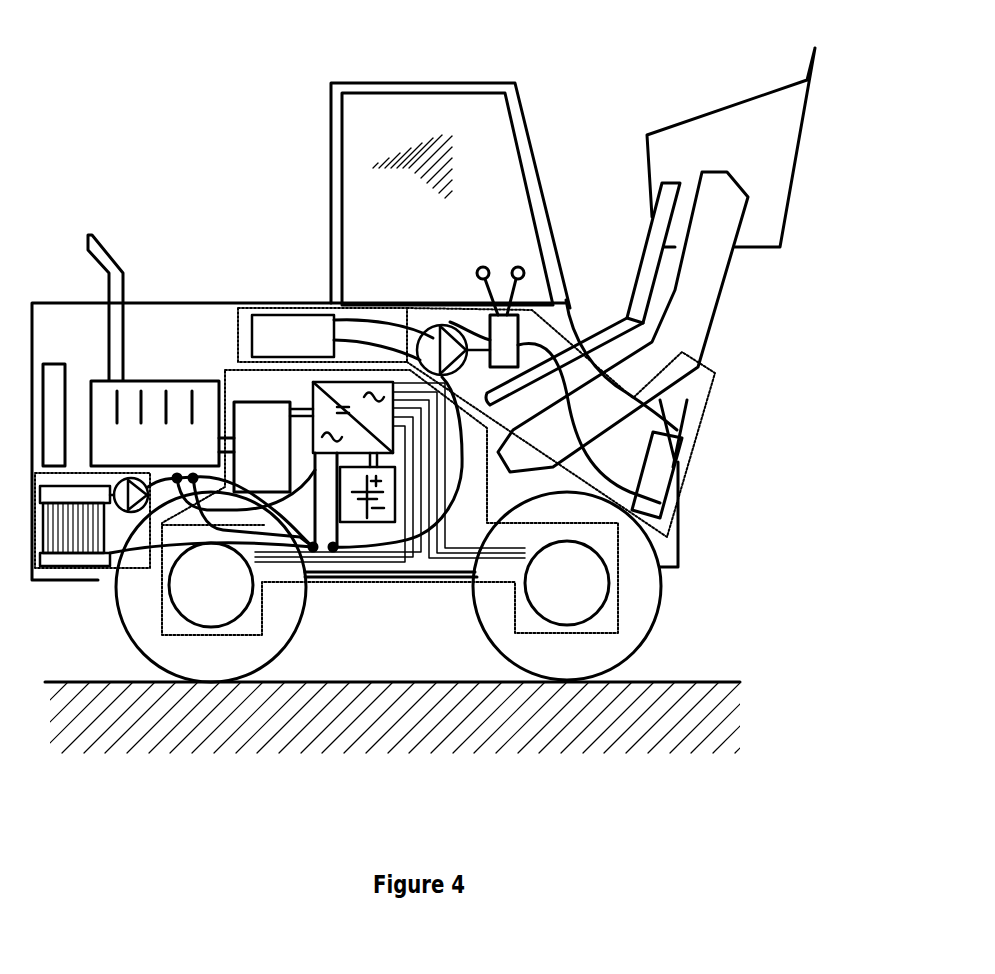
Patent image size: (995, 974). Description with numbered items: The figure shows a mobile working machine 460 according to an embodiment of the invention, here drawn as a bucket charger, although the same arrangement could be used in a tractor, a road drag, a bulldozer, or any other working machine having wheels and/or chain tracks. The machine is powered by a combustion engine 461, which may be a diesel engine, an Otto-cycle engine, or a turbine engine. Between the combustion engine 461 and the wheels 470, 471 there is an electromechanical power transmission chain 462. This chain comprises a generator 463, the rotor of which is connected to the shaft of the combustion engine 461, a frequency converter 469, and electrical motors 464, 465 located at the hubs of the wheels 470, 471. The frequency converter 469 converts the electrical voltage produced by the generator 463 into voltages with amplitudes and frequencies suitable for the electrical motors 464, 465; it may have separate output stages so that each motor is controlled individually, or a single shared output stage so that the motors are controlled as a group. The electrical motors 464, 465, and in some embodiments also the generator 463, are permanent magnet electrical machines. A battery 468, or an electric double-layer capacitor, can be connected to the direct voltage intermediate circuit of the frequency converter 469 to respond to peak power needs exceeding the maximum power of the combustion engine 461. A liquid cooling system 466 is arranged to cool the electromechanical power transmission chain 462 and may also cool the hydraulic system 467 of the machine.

The mobile working machine 460 is at (266, 146).
The combustion engine 461 is at (162, 423).
The electromechanical power transmission chain 462 is at (432, 582).
The generator 463 is at (262, 447).
The electrical motor 464 is at (211, 585).
The electrical motor 465 is at (567, 583).
The liquid cooling system 466 is at (78, 568).
The hydraulic system 467 is at (693, 442).
The battery 468 is at (367, 522).
The frequency converter 469 is at (315, 382).
The wheel 470 is at (211, 587).
The wheel 471 is at (567, 586).